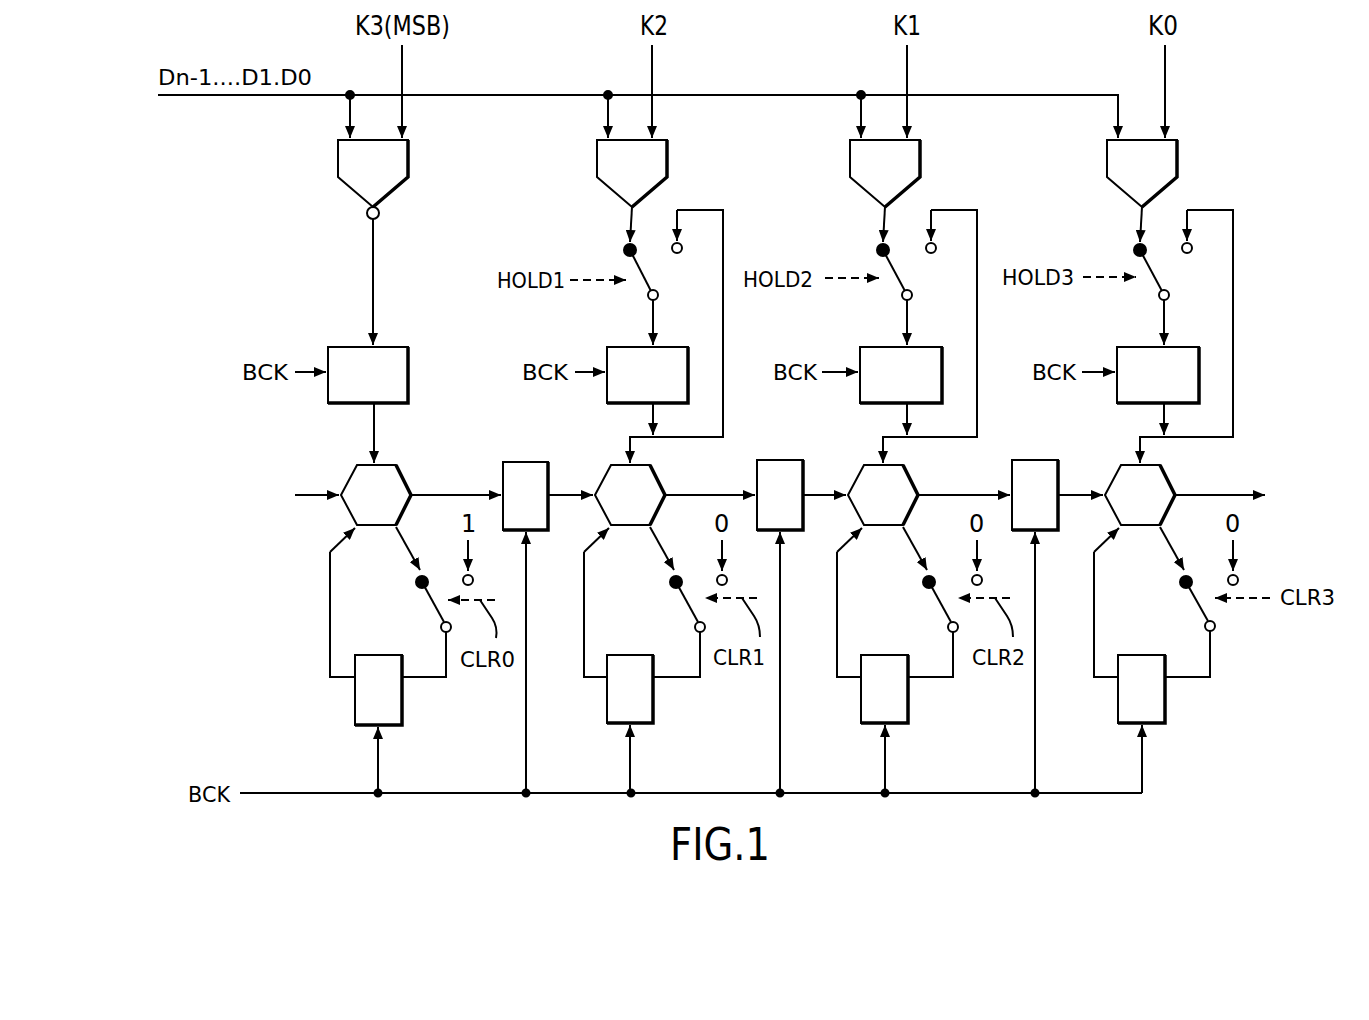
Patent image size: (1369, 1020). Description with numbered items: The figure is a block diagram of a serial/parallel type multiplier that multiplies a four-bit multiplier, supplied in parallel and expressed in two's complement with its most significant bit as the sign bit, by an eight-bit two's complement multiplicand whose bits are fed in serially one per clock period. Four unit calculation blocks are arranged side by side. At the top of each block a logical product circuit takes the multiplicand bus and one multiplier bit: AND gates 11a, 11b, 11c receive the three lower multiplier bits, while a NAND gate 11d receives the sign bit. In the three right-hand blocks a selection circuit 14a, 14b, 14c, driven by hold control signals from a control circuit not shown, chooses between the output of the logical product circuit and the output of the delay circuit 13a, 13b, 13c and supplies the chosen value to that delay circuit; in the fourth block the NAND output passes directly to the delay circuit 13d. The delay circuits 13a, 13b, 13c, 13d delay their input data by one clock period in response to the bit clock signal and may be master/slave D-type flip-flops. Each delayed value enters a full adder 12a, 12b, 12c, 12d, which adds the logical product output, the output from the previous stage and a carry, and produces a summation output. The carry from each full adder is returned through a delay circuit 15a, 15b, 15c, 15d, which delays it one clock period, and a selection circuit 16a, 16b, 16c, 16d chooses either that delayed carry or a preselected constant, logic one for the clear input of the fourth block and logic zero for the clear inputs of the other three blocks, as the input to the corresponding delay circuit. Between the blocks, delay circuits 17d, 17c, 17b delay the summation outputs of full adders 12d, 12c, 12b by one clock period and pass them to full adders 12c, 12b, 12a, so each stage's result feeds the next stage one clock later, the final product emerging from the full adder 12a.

The AND gate 11a is at (1177, 160).
The AND gate 11b is at (920, 160).
The AND gate 11c is at (667, 160).
The NAND gate 11d is at (408, 160).
The full adder 12a is at (1165, 484).
The full adder 12b is at (952, 479).
The full adder 12c is at (655, 484).
The full adder 12d is at (401, 484).
The delay circuit 13a is at (1188, 344).
The delay circuit 13b is at (932, 344).
The delay circuit 13c is at (678, 343).
The delay circuit 13d is at (348, 344).
The selection circuit 14a is at (1157, 298).
The selection circuit 14b is at (900, 298).
The selection circuit 14c is at (648, 299).
The delay circuit 15a is at (1165, 712).
The delay circuit 15b is at (908, 712).
The delay circuit 15c is at (653, 712).
The delay circuit 15d is at (357, 724).
The selection circuit 16a is at (1204, 628).
The selection circuit 16b is at (947, 627).
The selection circuit 16c is at (694, 627).
The selection circuit 16d is at (440, 630).
The delay circuit 17b is at (1036, 460).
The delay circuit 17c is at (788, 460).
The delay circuit 17d is at (538, 424).